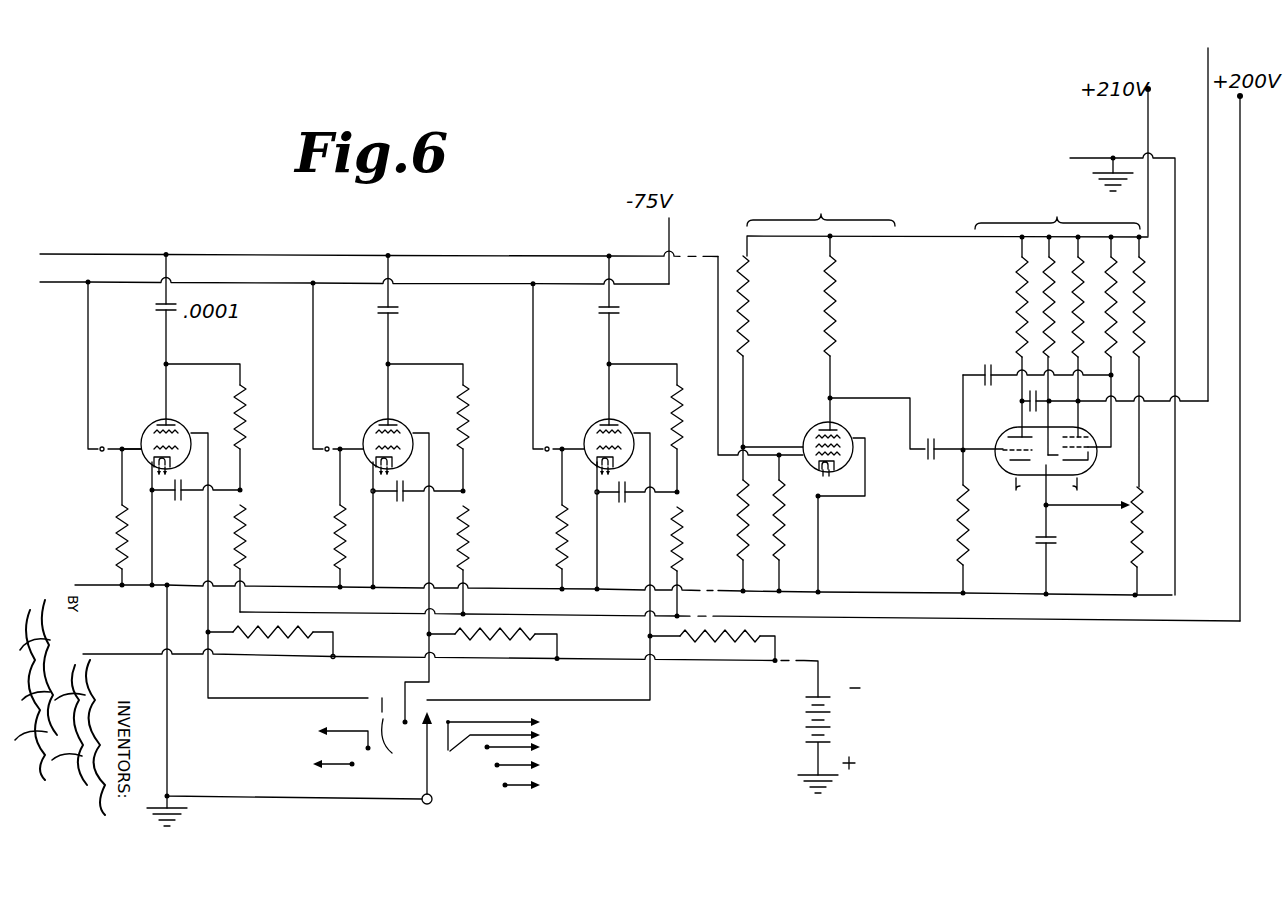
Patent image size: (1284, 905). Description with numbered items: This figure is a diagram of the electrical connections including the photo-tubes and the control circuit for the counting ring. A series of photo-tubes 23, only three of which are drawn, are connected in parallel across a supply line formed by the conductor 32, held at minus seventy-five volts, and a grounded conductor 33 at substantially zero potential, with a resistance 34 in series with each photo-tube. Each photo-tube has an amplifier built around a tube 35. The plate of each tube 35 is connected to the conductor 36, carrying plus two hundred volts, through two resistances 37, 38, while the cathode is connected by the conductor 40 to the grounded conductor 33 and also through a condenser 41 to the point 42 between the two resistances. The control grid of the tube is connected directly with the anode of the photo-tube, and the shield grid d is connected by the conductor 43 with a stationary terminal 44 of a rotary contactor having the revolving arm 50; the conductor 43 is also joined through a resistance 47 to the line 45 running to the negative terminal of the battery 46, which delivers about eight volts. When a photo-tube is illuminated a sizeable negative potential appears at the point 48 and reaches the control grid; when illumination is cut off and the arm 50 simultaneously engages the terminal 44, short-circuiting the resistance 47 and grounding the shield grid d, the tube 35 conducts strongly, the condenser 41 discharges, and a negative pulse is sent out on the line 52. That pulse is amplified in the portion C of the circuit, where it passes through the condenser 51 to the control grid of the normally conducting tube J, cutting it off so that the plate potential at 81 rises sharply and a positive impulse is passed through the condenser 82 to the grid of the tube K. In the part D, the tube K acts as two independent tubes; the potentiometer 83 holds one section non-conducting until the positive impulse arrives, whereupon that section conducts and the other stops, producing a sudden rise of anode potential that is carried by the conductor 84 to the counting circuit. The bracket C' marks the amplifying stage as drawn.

The photo-tube 23 is at (106, 448).
The conductor 32 is at (60, 284).
The grounded conductor 33 is at (78, 585).
The resistance 34 is at (117, 519).
The tube 35 is at (206, 406).
The conductor 36 is at (370, 614).
The resistance 37 is at (247, 404).
The resistance 38 is at (244, 526).
The conductor 40 is at (153, 540).
The condenser 41 is at (180, 494).
The point 42 is at (244, 490).
The conductor 43 is at (258, 680).
The stationary terminal 44 is at (426, 753).
The line 45 is at (122, 654).
The battery 46 is at (817, 740).
The resistance 47 is at (305, 630).
The point 48 is at (118, 452).
The revolving arm 50 is at (425, 772).
The condenser 51 is at (155, 308).
The line 52 is at (314, 254).
The plate potential point 81 is at (833, 398).
The condenser 82 is at (930, 461).
The potentiometer 83 is at (1132, 532).
The conductor 84 is at (1206, 55).
The amplifying portion C is at (193, 467).
The amplifier stage C' is at (942, 392).
The wave-sharpening part D is at (1082, 394).
The tube J is at (846, 430).
The tube K is at (1003, 432).
The shield grid d is at (142, 440).